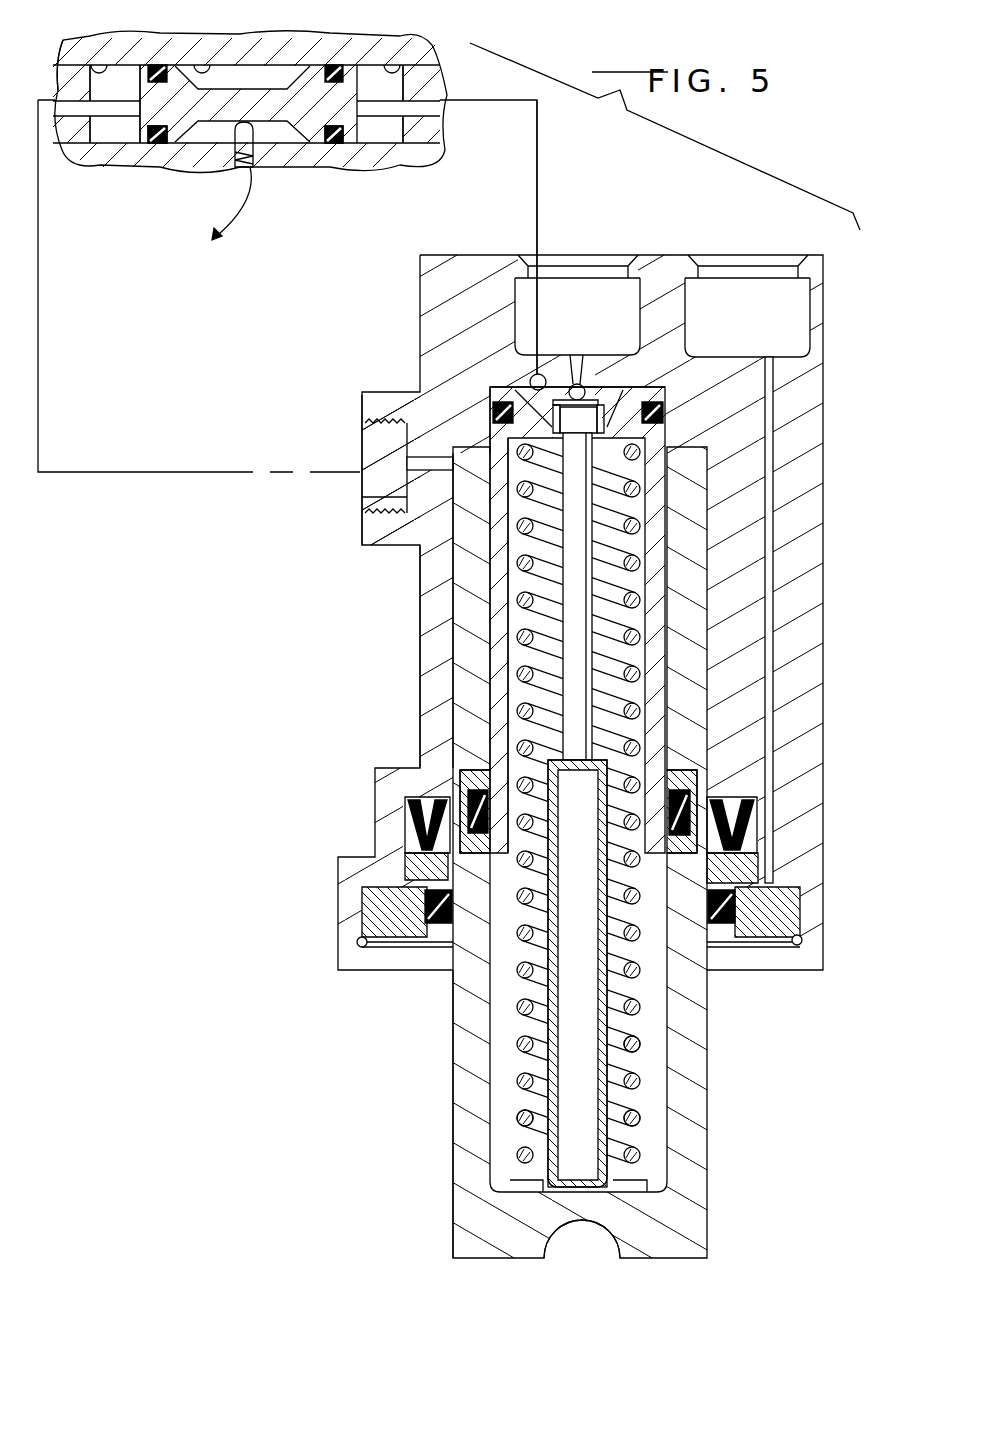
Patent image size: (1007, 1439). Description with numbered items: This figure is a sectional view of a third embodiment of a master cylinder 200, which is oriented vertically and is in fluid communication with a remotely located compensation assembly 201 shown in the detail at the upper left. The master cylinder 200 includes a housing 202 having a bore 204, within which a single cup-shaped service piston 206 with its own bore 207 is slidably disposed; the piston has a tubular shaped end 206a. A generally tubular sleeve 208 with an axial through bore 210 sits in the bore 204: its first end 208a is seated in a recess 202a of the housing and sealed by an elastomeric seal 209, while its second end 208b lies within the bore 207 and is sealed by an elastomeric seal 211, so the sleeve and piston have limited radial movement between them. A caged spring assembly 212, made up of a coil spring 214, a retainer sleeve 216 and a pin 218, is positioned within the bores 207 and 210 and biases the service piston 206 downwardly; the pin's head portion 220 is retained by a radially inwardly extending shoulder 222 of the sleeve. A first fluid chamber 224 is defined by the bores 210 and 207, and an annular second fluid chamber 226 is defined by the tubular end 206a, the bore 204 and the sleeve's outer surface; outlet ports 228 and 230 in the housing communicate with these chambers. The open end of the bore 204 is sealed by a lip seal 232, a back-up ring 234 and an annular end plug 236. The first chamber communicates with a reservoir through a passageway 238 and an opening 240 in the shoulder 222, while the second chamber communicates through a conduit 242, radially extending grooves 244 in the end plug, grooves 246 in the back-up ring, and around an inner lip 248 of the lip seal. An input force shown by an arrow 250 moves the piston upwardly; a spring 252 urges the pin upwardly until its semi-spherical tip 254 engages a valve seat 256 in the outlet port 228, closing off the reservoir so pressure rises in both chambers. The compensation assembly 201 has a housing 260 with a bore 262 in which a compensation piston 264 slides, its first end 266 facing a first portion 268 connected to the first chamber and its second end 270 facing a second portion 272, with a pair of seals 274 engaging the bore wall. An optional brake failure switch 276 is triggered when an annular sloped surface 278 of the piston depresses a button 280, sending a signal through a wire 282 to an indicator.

The master cylinder 200 is at (408, 325).
The compensation assembly 201 is at (174, 50).
The housing 202 is at (383, 778).
The recess 202a is at (670, 383).
The bore 204 is at (463, 575).
The service piston 206 is at (693, 1200).
The tubular shaped end 206a is at (468, 773).
The bore 207 is at (497, 1066).
The tubular sleeve 208 is at (660, 706).
The first end 208a is at (497, 410).
The second end 208b is at (500, 860).
The elastomeric seal 209 is at (490, 396).
The through bore 210 is at (648, 660).
The elastomeric seal 211 is at (485, 813).
The caged spring assembly 212 is at (505, 658).
The coil spring 214 is at (643, 1053).
The retainer sleeve 216 is at (610, 1033).
The pin 218 is at (600, 560).
The head portion 220 is at (562, 428).
The shoulder 222 is at (600, 446).
The first fluid chamber 224 is at (520, 620).
The second fluid chamber 226 is at (467, 697).
The outlet port 228 is at (530, 384).
The outlet port 230 is at (363, 514).
The lip seal 232 is at (720, 795).
The back-up ring 234 is at (740, 865).
The end plug 236 is at (763, 932).
The passageway 238 is at (585, 357).
The opening 240 is at (600, 470).
The conduit 242 is at (792, 585).
The radially extending grooves 244 is at (778, 885).
The radially extending grooves 246 is at (735, 888).
The inner lip 248 is at (710, 693).
The arrow 250 is at (582, 1297).
The spring 252 is at (604, 425).
The semi-spherical tip 254 is at (600, 396).
The valve seat 256 is at (577, 392).
The housing 260 is at (258, 52).
The bore 262 is at (213, 60).
The compensation piston 264 is at (327, 58).
The first end 266 is at (400, 150).
The first portion 268 is at (415, 58).
The second end 270 is at (70, 145).
The second portion 272 is at (88, 60).
The seals 274 is at (157, 142).
The brake failure switch 276 is at (262, 170).
The annular sloped surface 278 is at (296, 125).
The button 280 is at (232, 140).
The wire 282 is at (233, 235).